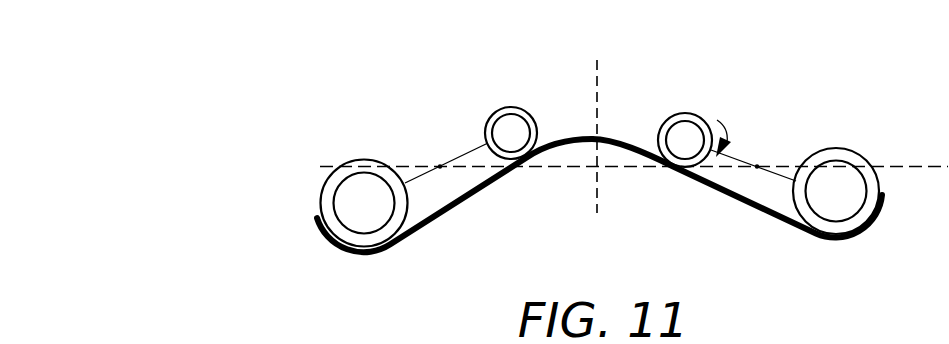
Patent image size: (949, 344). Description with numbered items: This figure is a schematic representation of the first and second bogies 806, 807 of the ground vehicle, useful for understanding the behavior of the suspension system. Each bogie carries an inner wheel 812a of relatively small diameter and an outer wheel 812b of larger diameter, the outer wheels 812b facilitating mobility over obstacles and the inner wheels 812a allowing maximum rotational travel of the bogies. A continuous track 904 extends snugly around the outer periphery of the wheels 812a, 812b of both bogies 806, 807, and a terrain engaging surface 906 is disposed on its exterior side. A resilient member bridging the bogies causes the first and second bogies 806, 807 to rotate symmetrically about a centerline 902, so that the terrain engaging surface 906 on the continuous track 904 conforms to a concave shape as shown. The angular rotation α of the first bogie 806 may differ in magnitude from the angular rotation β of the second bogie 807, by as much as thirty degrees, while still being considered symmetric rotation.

The first bogie 806 is at (424, 128).
The second bogie 807 is at (769, 115).
The inner wheel 812a is at (527, 111).
The outer wheel 812b is at (347, 220).
The centerline 902 is at (595, 61).
The continuous track 904 is at (445, 211).
The terrain engaging surface 906 is at (686, 196).